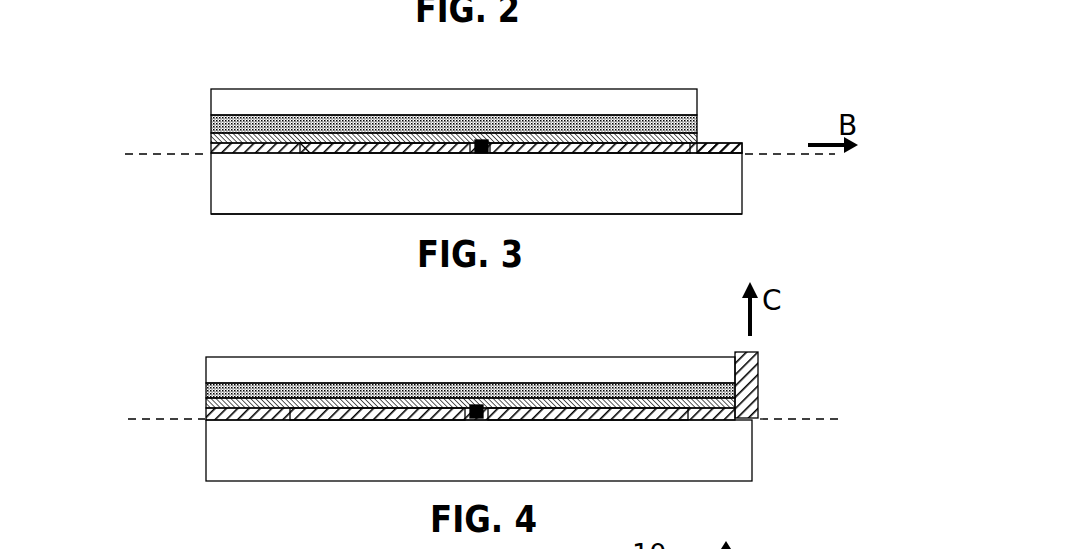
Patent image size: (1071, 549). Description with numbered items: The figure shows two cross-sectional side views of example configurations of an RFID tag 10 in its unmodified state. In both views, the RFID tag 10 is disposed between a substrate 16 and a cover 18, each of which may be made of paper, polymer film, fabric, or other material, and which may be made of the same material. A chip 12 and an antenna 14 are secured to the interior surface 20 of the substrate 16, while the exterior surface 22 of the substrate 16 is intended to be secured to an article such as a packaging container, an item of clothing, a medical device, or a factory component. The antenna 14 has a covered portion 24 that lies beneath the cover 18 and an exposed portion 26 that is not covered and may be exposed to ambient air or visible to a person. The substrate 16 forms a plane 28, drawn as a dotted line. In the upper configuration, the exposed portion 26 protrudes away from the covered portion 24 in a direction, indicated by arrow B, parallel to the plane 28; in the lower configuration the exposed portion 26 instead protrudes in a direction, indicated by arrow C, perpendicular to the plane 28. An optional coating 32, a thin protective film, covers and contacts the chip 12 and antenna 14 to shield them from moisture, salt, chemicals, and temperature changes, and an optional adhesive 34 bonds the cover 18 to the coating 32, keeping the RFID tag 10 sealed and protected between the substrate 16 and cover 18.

In FIG. 3, the RFID tag 10 is at (603, 72).
In FIG. 4, the RFID tag 10 is at (608, 333).
In FIG. 3, the chip 12 is at (485, 155).
In FIG. 4, the chip 12 is at (477, 420).
In FIG. 3, the antenna 14 is at (232, 150).
In FIG. 4, the antenna 14 is at (470, 414).
In FIG. 3, the substrate 16 is at (232, 180).
In FIG. 4, the substrate 16 is at (479, 450).
In FIG. 3, the cover 18 is at (232, 97).
In FIG. 4, the cover 18 is at (470, 370).
In FIG. 3, the interior surface 20 is at (305, 144).
In FIG. 3, the exterior surface 22 is at (312, 220).
In FIG. 3, the covered portion 24 is at (340, 153).
In FIG. 4, the covered portion 24 is at (336, 420).
In FIG. 3, the exposed portion 26 is at (722, 142).
In FIG. 4, the exposed portion 26 is at (742, 352).
In FIG. 3, the plane 28 is at (780, 155).
In FIG. 4, the plane 28 is at (810, 420).
In FIG. 3, the coating 32 is at (232, 135).
In FIG. 4, the coating 32 is at (470, 403).
In FIG. 3, the adhesive 34 is at (232, 118).
In FIG. 4, the adhesive 34 is at (470, 390).